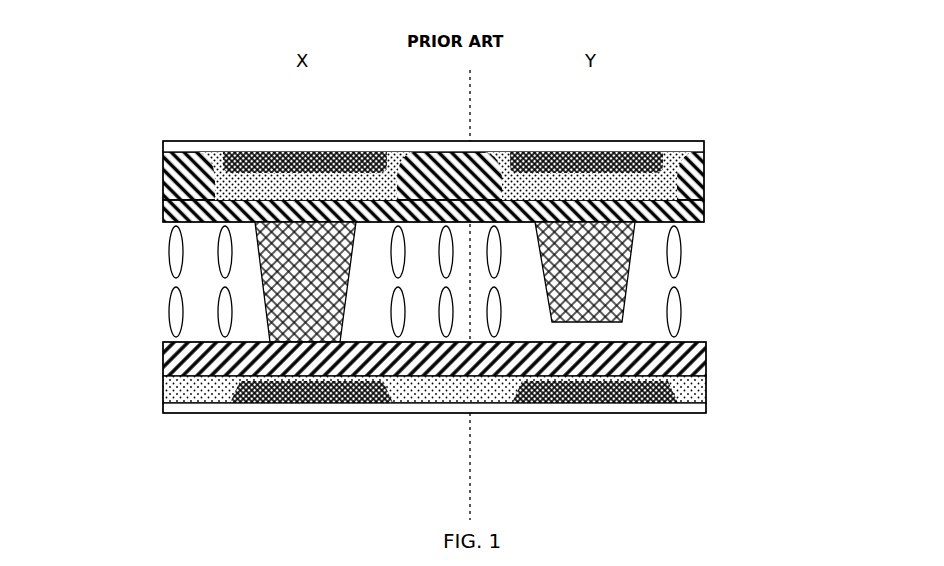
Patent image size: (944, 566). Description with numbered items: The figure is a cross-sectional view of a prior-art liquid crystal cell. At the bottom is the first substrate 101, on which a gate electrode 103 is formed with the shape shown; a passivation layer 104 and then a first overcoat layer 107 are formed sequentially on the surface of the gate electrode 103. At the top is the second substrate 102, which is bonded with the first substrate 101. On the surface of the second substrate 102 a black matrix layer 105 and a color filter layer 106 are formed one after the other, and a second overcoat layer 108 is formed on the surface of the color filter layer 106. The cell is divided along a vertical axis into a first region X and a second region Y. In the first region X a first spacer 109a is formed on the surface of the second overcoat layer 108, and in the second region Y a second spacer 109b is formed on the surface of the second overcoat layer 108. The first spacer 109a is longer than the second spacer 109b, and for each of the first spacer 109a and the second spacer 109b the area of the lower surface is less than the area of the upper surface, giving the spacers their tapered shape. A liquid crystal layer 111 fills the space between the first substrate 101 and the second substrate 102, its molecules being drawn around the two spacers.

The first substrate 101 is at (665, 405).
The second substrate 102 is at (700, 144).
The gate electrode 103 is at (280, 402).
The passivation layer 104 is at (165, 393).
The black matrix layer 105 is at (345, 145).
The color filter layer 106 is at (704, 180).
The first overcoat layer 107 is at (706, 360).
The second overcoat layer 108 is at (163, 213).
The first spacer 109a is at (265, 275).
The second spacer 109b is at (612, 290).
The liquid crystal layer 111 is at (683, 300).